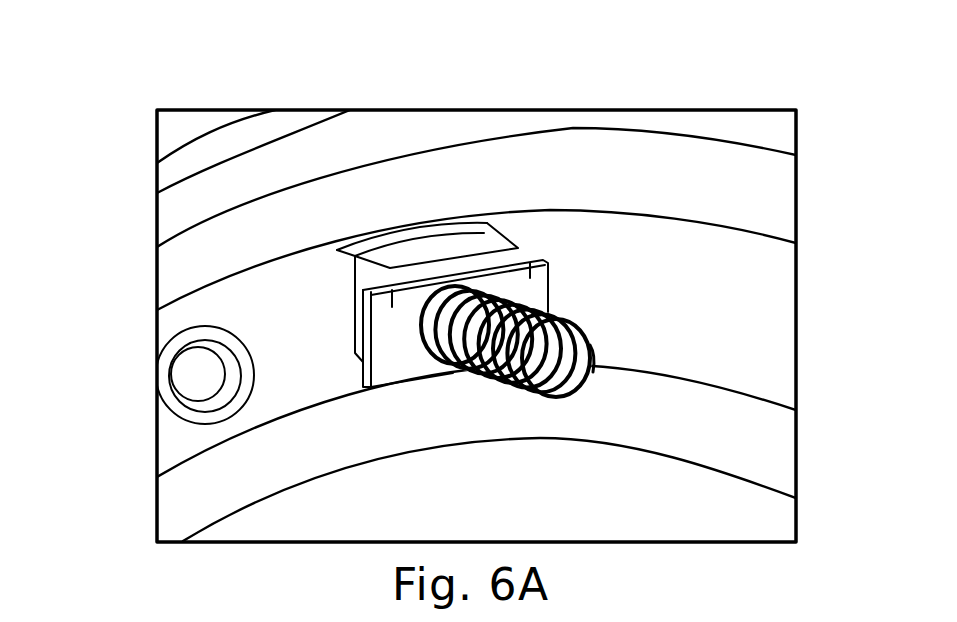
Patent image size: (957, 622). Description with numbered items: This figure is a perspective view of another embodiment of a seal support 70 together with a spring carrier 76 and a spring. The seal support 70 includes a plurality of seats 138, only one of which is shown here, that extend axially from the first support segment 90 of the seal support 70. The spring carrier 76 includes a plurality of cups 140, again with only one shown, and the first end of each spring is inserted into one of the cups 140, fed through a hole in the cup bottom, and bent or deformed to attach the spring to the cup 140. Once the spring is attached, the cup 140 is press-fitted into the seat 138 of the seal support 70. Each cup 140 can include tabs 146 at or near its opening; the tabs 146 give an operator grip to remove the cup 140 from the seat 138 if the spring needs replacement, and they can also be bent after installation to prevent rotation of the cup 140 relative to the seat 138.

The seal support 70 is at (247, 187).
The first support segment 90 is at (745, 302).
The seat 138 is at (445, 250).
The tab 146 is at (535, 273).
The spring carrier 76 is at (530, 218).
The cup 140 is at (490, 266).